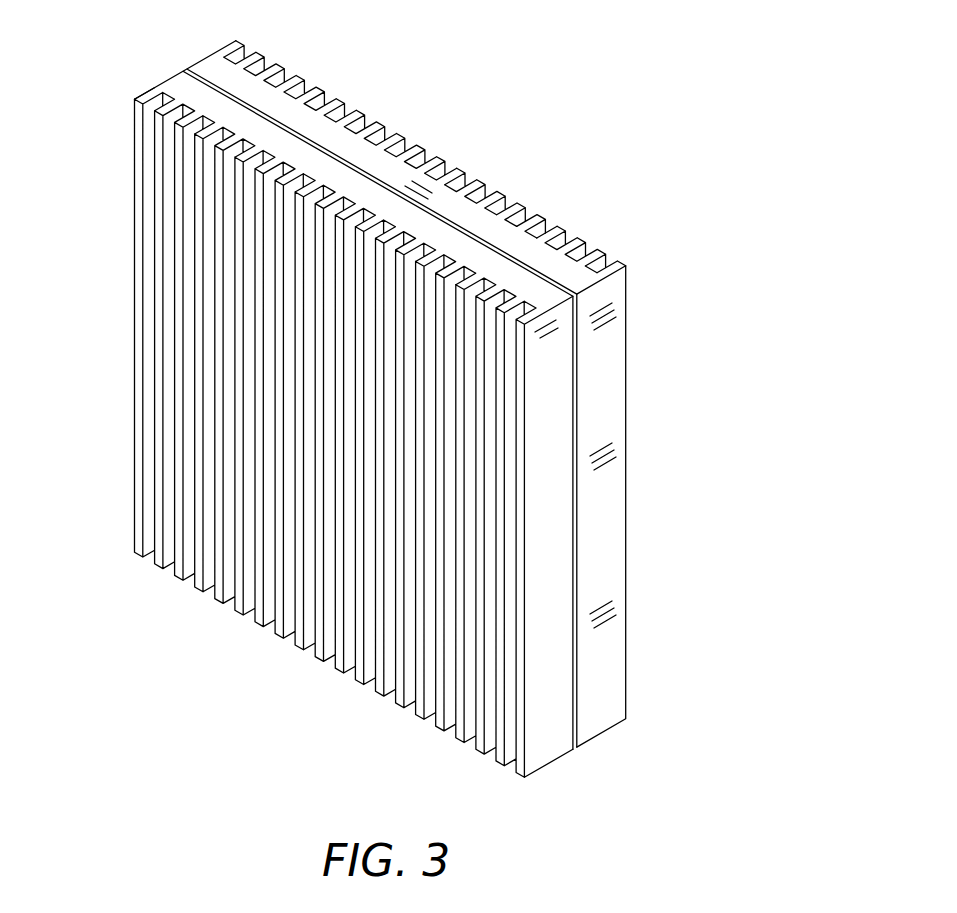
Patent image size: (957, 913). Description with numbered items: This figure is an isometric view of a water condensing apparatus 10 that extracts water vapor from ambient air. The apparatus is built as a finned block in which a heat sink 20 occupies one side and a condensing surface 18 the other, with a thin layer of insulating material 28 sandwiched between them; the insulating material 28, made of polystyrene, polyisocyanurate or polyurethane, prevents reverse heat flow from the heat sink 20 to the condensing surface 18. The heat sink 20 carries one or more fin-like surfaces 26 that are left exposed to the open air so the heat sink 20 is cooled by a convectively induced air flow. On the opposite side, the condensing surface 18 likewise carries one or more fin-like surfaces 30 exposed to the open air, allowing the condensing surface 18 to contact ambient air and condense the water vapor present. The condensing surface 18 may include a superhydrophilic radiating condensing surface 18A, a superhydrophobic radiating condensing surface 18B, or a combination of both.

The water condensing apparatus 10 is at (539, 96).
The condensing surface 18 is at (628, 521).
The superhydrophilic radiating condensing surface 18A is at (669, 304).
The superhydrophobic radiating condensing surface 18B is at (669, 683).
The heat sink 20 is at (136, 345).
The fin-like surfaces 26 is at (158, 516).
The layer of insulating material 28 is at (578, 717).
The fin-like surfaces 30 is at (538, 214).